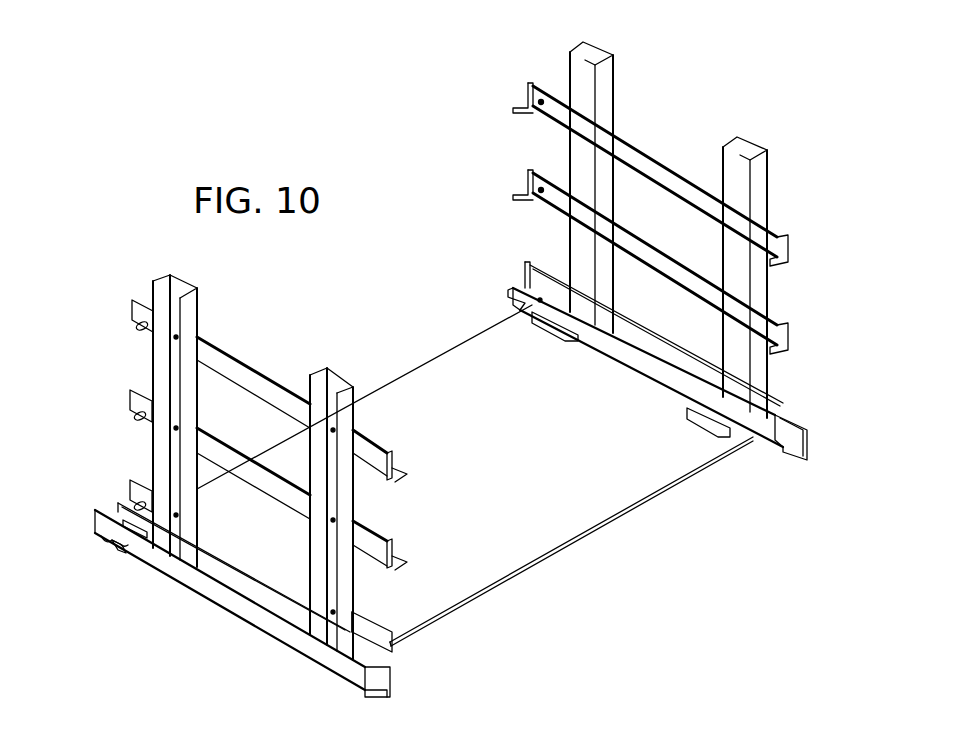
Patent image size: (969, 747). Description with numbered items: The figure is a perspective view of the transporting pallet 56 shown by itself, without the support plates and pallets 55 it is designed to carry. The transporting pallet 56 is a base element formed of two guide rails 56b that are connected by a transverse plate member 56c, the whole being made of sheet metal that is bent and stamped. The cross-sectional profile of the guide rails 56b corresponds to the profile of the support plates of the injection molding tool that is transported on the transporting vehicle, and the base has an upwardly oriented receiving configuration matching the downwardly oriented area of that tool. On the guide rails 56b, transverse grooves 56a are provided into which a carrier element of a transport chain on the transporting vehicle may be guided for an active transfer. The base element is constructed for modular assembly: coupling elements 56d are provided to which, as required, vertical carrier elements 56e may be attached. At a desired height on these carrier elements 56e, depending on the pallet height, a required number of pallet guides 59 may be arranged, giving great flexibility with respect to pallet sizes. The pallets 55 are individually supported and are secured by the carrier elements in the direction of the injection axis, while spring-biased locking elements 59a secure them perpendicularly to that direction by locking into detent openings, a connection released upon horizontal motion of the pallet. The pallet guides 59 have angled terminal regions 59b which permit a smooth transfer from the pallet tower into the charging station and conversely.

The pallet 55 is at (748, 738).
The transporting pallet 56 is at (432, 360).
The transverse groove 56a is at (122, 545).
The guide rail 56b is at (238, 607).
The transverse plate member 56c is at (540, 424).
The coupling element 56d is at (720, 383).
The vertical carrier element 56e is at (602, 93).
The pallet guide 59 is at (237, 373).
The spring-biased locking element 59a is at (137, 325).
The angled terminal region 59b is at (392, 480).